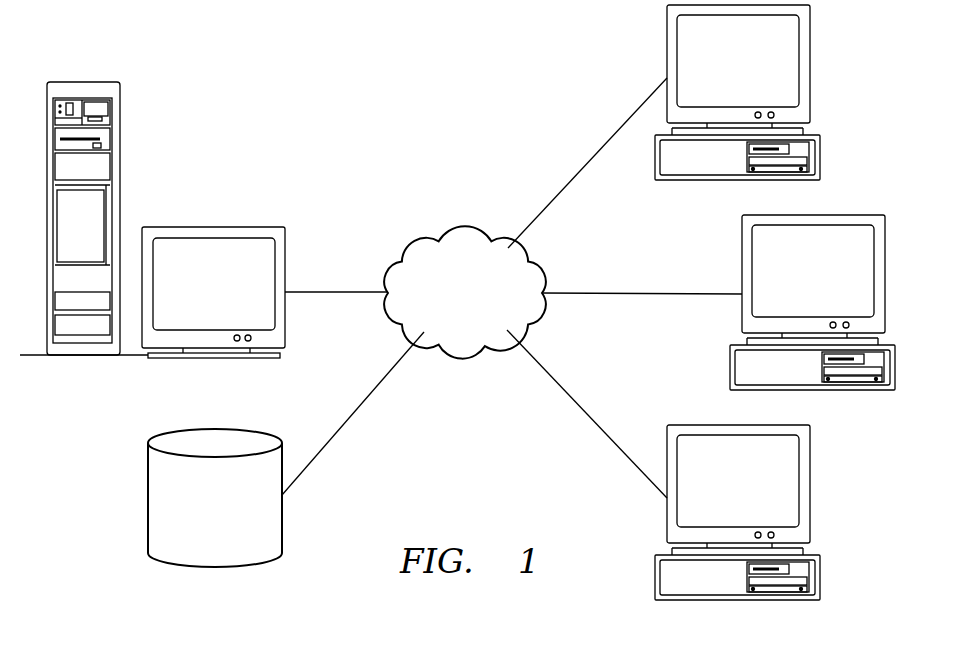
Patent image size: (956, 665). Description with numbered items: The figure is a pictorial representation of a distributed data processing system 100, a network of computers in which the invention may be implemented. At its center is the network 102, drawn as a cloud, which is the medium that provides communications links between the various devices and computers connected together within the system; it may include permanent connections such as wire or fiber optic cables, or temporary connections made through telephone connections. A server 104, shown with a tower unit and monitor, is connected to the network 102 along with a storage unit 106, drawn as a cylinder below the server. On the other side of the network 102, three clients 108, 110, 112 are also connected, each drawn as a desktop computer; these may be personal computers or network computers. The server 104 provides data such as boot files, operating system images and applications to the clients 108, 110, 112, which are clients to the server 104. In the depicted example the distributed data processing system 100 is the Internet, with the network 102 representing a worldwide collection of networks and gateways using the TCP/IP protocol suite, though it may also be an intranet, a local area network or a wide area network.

The distributed data processing system 100 is at (327, 80).
The network 102 is at (489, 305).
The server 104 is at (235, 293).
The storage unit 106 is at (237, 520).
The client 108 is at (760, 75).
The client 110 is at (838, 285).
The client 112 is at (762, 495).